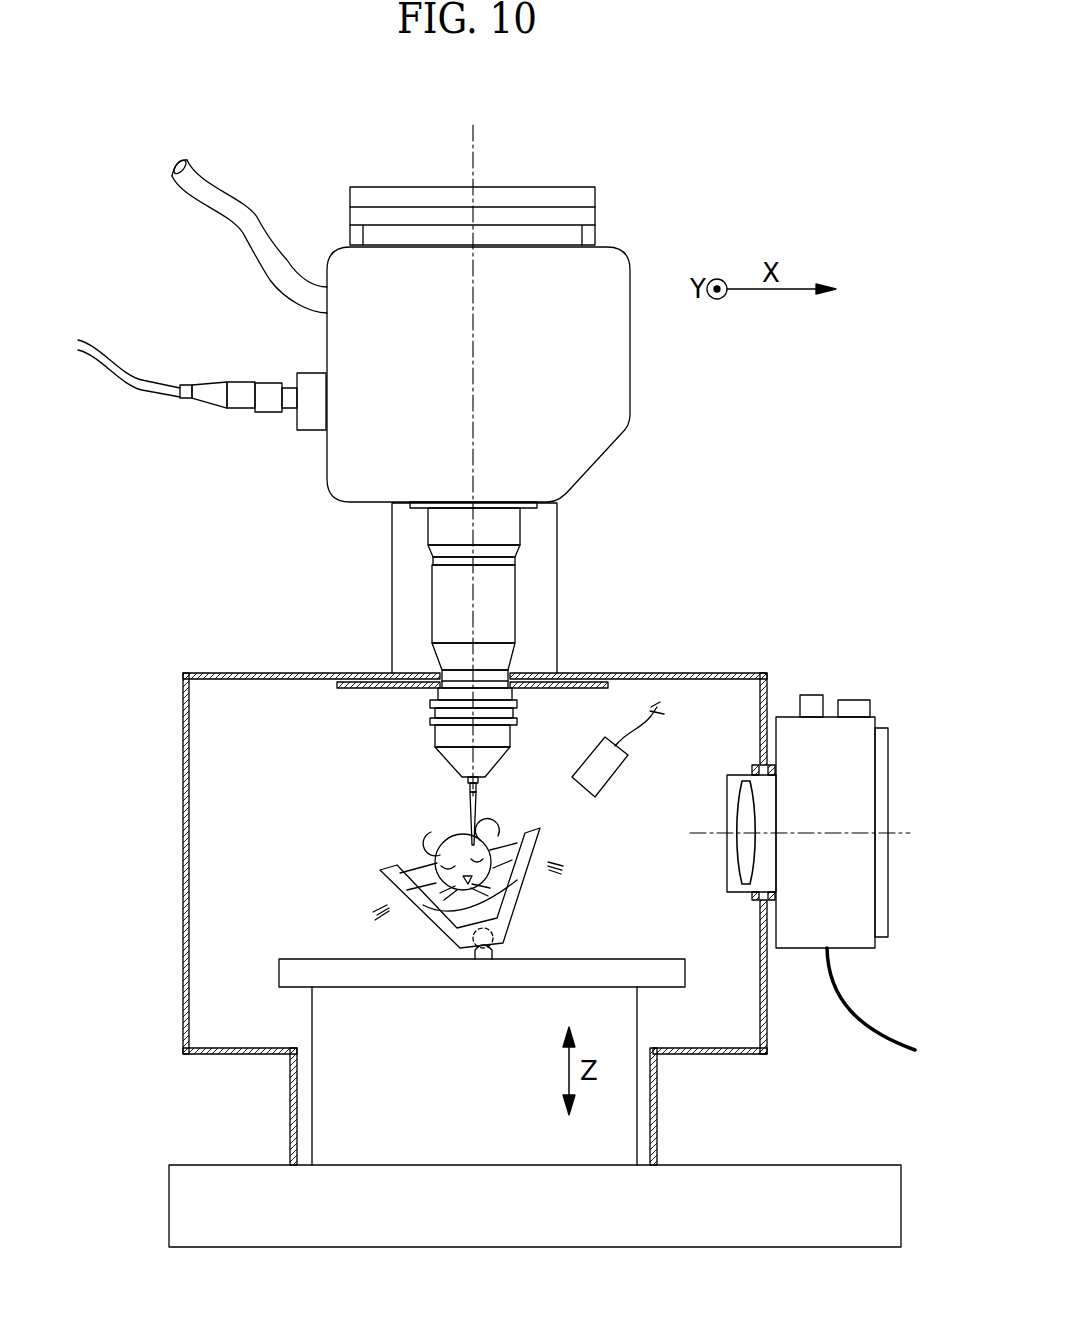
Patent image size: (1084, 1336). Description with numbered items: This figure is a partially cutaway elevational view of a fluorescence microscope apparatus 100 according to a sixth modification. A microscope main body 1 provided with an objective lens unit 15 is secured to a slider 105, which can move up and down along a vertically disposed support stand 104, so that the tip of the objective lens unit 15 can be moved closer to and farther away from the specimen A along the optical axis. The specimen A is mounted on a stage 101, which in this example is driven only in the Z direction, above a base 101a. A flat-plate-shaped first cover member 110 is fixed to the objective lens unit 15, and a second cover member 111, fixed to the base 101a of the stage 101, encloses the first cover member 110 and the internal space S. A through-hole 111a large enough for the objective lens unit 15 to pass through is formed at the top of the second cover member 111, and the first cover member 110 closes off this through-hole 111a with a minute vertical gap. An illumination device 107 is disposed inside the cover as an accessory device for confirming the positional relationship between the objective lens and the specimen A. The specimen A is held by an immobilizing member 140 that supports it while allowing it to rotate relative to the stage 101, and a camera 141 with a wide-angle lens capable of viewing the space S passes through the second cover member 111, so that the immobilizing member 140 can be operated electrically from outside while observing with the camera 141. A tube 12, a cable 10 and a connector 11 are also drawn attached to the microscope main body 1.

The fluorescence microscope apparatus 100 is at (752, 180).
The slider 105 is at (596, 233).
The microscope main body 1 is at (320, 475).
The tube 12 is at (236, 222).
The cable 10 is at (147, 378).
The connector 11 is at (222, 386).
The support stand 104 is at (558, 520).
The objective lens unit 15 is at (448, 750).
The first cover member 110 is at (432, 899).
The second cover member 111 is at (183, 781).
The through-hole 111a is at (552, 684).
The internal space S is at (246, 705).
The stage 101 is at (688, 972).
The base 101a is at (800, 1163).
The illumination device 107 is at (617, 768).
The camera 141 is at (846, 735).
The immobilizing member 140 is at (536, 890).
The specimen A is at (430, 840).